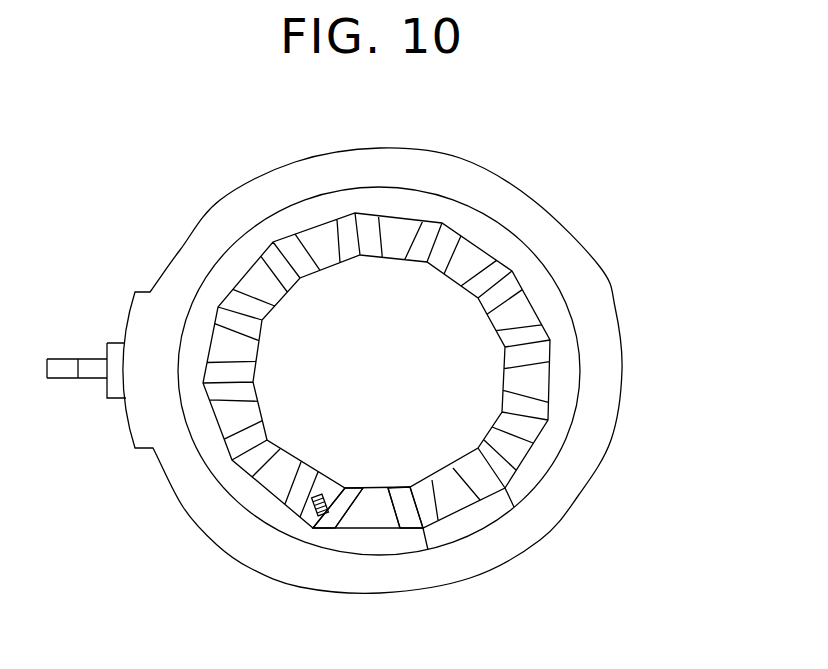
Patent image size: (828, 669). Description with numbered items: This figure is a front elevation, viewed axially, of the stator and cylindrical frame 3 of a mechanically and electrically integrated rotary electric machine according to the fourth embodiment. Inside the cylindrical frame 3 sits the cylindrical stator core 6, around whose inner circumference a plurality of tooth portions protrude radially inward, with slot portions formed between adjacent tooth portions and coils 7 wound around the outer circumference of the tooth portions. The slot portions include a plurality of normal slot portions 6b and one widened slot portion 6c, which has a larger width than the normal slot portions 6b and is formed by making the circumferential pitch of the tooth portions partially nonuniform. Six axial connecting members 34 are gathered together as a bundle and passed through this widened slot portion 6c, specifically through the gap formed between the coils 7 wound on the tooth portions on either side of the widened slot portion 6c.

The cylindrical frame 3 is at (596, 426).
The stator core 6 is at (556, 315).
The coils 7 is at (427, 233).
The normal slot portions 6b is at (420, 480).
The widened slot portion 6c is at (360, 483).
The axial connecting members 34 is at (313, 517).